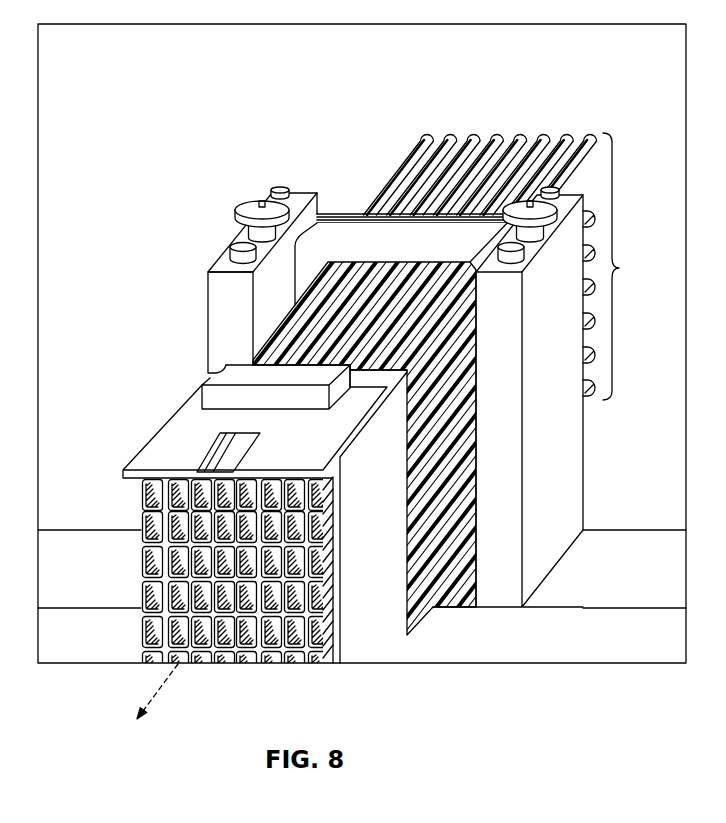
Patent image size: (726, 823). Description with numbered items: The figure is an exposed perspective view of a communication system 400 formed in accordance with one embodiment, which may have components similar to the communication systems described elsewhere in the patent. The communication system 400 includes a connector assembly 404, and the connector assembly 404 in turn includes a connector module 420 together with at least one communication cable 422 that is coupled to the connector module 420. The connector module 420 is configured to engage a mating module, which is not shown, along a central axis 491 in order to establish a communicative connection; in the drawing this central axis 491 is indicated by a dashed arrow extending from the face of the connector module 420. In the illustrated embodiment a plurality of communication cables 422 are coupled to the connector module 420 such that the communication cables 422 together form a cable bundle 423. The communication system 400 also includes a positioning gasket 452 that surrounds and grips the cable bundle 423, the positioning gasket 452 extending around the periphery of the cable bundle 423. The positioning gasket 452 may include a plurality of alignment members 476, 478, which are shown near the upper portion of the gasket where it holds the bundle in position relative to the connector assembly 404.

The communication system 400 is at (158, 132).
The connector assembly 404 is at (167, 318).
The connector module 420 is at (150, 407).
The communication cable 422 is at (440, 372).
The cable bundle 423 is at (630, 266).
The positioning gasket 452 is at (445, 203).
The alignment member 476 is at (332, 232).
The alignment member 478 is at (342, 218).
The central axis 491 is at (174, 674).